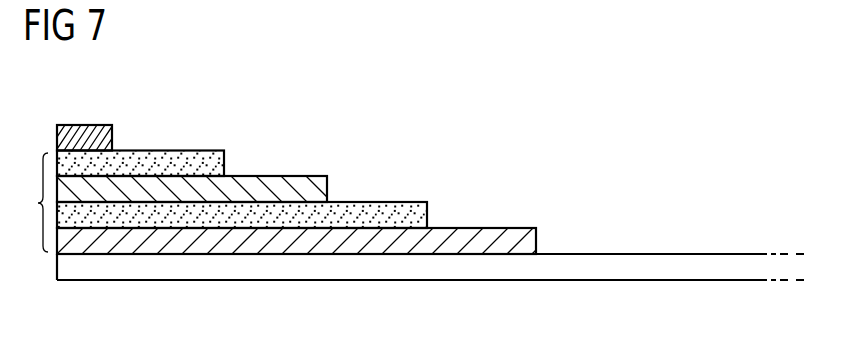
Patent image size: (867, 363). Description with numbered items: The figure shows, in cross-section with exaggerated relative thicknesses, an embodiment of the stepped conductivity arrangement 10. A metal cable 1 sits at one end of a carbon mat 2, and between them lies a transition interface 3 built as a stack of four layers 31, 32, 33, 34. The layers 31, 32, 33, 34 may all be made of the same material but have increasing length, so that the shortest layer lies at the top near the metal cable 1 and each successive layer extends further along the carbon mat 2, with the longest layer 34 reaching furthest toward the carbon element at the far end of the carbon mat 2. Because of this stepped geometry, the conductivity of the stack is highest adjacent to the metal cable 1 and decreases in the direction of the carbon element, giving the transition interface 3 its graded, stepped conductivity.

The metal cable 1 is at (105, 125).
The carbon mat 2 is at (640, 254).
The transition interface 3 is at (33, 202).
The stepped conductivity arrangement 10 is at (628, 115).
The first layer 31 is at (210, 150).
The second layer 32 is at (312, 176).
The third layer 33 is at (408, 202).
The fourth layer 34 is at (518, 228).